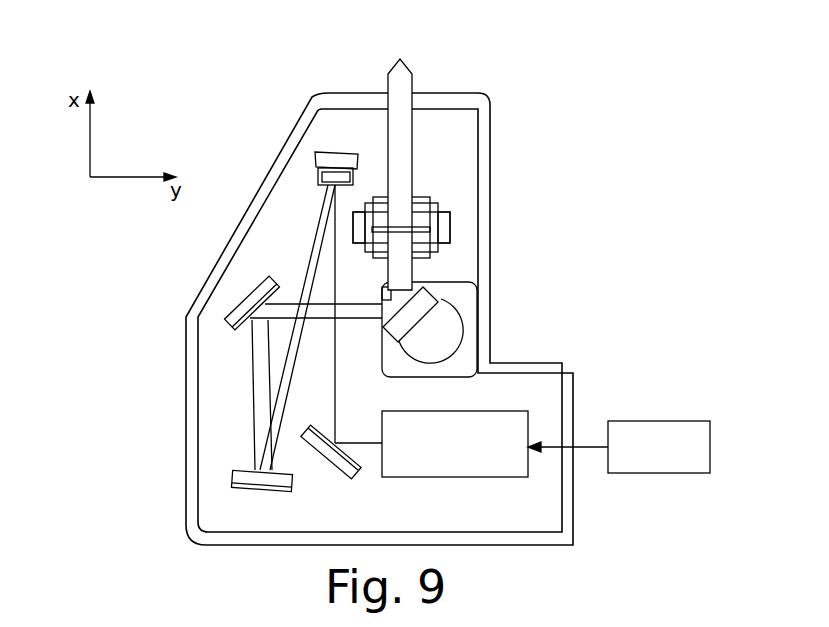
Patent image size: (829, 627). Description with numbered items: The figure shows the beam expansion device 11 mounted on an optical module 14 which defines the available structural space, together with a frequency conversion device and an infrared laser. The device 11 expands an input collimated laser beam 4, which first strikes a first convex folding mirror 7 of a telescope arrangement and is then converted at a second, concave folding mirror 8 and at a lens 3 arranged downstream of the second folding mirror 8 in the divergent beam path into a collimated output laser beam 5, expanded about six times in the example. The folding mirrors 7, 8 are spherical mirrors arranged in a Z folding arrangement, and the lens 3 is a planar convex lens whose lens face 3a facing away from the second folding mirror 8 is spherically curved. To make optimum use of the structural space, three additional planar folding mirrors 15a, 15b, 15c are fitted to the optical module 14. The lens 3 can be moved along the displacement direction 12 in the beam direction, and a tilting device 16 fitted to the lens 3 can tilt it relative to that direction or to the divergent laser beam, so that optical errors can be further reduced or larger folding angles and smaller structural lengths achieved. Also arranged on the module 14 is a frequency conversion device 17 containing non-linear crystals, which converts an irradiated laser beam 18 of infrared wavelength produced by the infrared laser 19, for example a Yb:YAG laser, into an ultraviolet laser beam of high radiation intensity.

The lens 3 is at (445, 230).
The lens face 3a is at (417, 226).
The input collimated laser beam 4 is at (335, 345).
The collimated output laser beam 5 is at (400, 125).
The first convex folding mirror 7 is at (322, 178).
The second concave folding mirror 8 is at (235, 472).
The device 11 is at (270, 126).
The displacement direction 12 is at (453, 238).
The optical module 14 is at (525, 518).
The planar folding mirror 15a is at (348, 472).
The planar folding mirror 15b is at (243, 303).
The planar folding mirror 15c is at (385, 325).
The tilting device 16 is at (459, 240).
The frequency conversion device 17 is at (455, 457).
The irradiated laser beam 18 is at (588, 450).
The infrared laser 19 is at (675, 457).